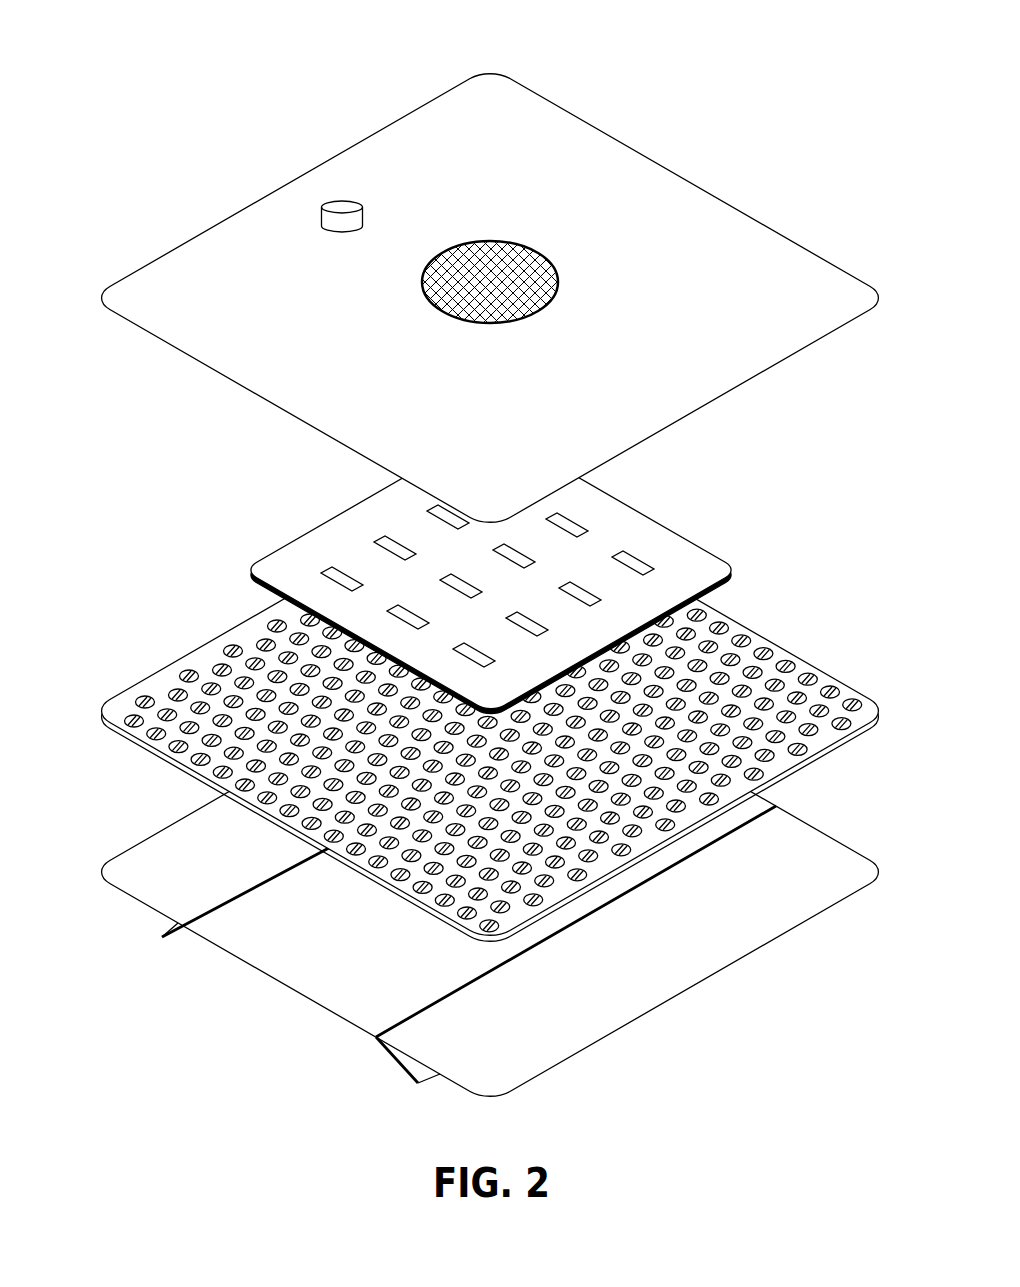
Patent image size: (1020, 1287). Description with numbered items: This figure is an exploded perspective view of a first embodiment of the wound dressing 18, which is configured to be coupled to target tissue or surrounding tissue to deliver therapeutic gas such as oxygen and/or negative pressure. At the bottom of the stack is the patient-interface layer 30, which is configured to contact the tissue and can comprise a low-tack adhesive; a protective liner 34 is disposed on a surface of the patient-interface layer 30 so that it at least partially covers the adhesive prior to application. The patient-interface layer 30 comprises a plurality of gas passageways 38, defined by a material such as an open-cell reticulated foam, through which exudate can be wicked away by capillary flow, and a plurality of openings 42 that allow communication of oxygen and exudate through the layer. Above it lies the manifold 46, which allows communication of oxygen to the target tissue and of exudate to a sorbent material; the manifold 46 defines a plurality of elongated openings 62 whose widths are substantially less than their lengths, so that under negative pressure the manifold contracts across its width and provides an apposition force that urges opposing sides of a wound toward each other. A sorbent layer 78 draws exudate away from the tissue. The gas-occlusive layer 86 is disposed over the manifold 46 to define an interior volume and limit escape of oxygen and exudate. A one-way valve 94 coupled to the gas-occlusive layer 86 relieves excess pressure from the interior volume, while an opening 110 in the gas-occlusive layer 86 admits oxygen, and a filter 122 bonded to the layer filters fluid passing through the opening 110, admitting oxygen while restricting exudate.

The wound dressing 18 is at (118, 97).
The patient-interface layer 30 is at (147, 682).
The protective liner 34 is at (115, 853).
The gas passageways 38 is at (823, 755).
The openings 42 is at (227, 645).
The manifold 46 is at (260, 562).
The openings 62 is at (641, 552).
The sorbent layer 78 is at (735, 573).
The gas-occlusive layer 86 is at (778, 233).
The valve 94 is at (321, 207).
The opening 110 is at (547, 260).
The filter 122 is at (473, 280).